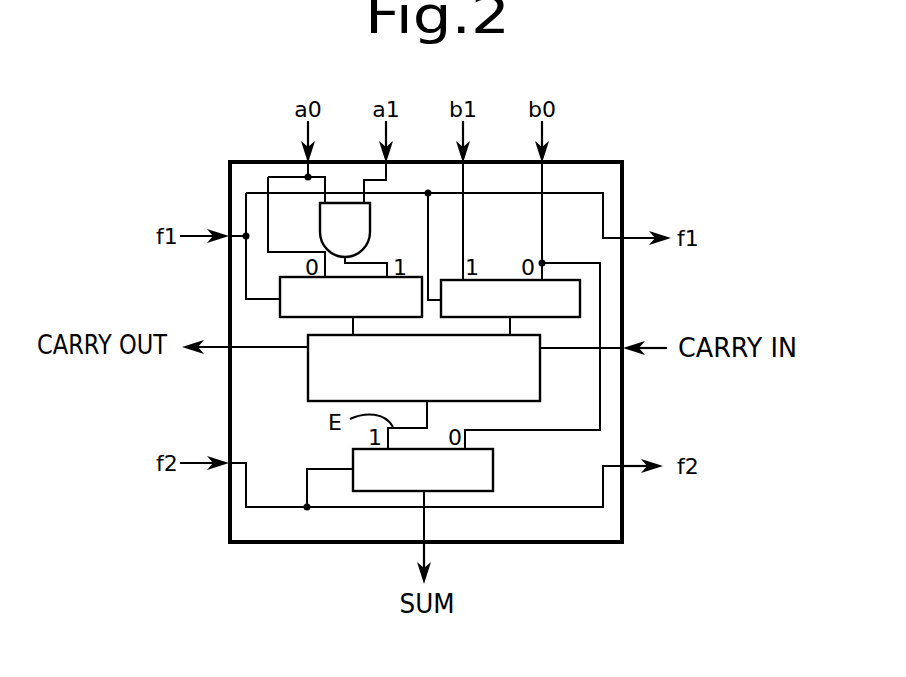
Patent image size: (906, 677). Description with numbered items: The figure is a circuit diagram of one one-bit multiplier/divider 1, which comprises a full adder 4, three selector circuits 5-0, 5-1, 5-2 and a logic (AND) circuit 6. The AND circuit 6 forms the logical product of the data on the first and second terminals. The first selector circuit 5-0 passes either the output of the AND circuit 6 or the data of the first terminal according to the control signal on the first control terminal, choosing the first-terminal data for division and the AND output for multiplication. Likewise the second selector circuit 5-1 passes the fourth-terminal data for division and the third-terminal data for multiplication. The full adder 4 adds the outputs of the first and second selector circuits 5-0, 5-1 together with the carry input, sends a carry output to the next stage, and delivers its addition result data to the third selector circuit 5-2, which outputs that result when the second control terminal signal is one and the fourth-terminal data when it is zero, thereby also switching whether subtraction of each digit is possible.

The one-bit multiplier/divider 1 is at (622, 132).
The full adder 4 is at (424, 368).
The first selector circuit 5-0 is at (351, 297).
The second selector circuit 5-1 is at (510, 298).
The third selector circuit 5-2 is at (423, 470).
The logic (AND) circuit 6 is at (345, 230).